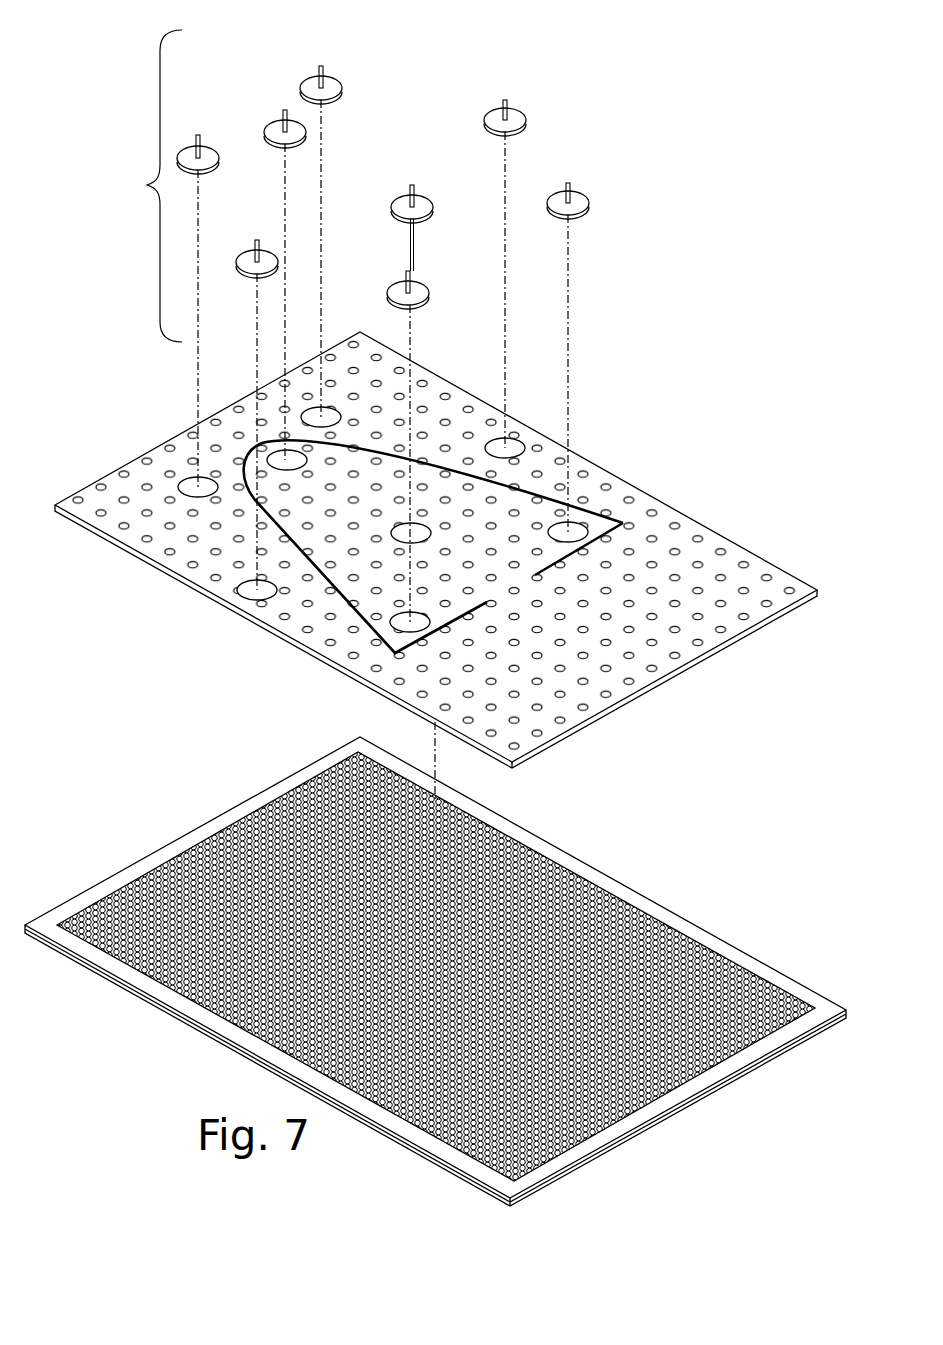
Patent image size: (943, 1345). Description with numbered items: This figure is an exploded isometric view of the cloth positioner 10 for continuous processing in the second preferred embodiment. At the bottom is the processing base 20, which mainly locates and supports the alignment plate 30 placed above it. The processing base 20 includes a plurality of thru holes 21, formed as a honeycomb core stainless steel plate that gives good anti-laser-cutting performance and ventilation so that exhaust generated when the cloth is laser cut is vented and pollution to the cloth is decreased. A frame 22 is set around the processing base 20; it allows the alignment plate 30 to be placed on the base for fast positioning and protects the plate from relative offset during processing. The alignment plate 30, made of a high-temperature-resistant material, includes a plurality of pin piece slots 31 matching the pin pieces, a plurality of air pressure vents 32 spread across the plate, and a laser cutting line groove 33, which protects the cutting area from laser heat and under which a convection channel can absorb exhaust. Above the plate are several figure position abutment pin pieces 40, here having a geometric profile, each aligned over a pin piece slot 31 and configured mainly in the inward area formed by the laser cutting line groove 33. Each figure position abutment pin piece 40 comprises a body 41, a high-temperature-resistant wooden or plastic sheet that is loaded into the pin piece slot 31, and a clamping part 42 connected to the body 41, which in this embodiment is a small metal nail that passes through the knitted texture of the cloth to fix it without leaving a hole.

The cloth positioner 10 is at (742, 214).
The processing base 20 is at (208, 1059).
The thru holes 21 is at (185, 856).
The frame 22 is at (590, 872).
The alignment plate 30 is at (193, 623).
The pin piece slot 31 is at (186, 481).
The air pressure vents 32 is at (120, 494).
The laser cutting line groove 33 is at (440, 466).
The figure position abutment pin piece 40 is at (147, 185).
The body 41 is at (600, 192).
The clamping part 42 is at (198, 136).